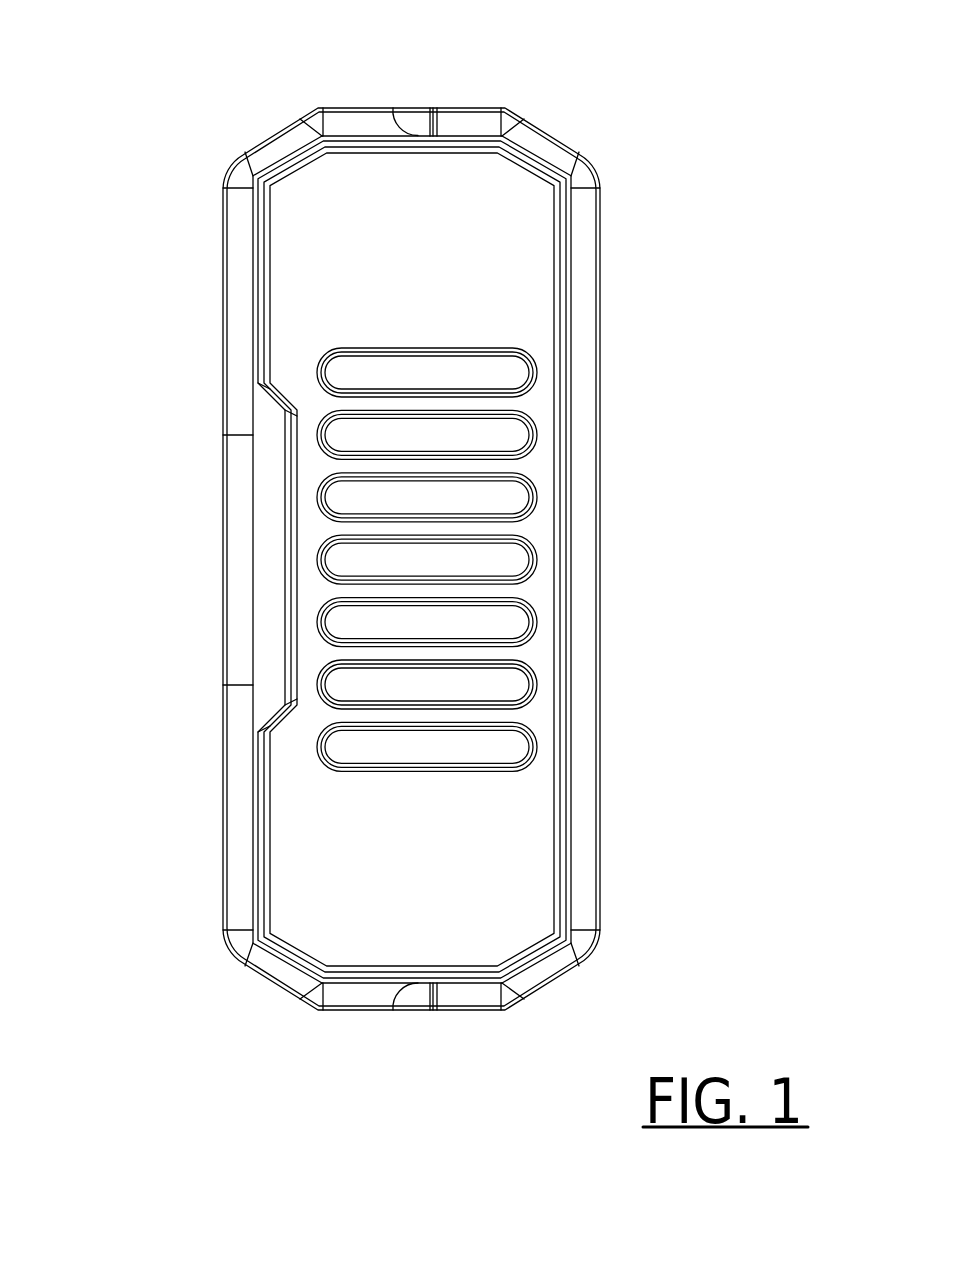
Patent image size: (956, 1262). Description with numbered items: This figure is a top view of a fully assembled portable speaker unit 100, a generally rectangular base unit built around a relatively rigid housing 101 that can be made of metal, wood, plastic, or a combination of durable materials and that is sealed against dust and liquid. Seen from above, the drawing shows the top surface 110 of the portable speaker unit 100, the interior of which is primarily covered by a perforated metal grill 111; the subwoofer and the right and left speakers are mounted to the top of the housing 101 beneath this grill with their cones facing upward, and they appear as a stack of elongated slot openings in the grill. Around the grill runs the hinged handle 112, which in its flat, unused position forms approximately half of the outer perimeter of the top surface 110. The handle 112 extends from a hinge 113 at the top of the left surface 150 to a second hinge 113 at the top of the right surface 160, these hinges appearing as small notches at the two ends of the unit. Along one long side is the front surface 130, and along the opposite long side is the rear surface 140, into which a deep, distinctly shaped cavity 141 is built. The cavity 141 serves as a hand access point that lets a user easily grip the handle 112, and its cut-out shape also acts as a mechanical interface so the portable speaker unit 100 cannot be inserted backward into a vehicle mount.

The portable speaker unit 100 is at (578, 141).
The housing 101 is at (578, 650).
The top surface 110 is at (290, 873).
The perforated metal grill 111 is at (505, 310).
The hinged handle 112 is at (235, 487).
The hinge 113 is at (430, 106).
The front surface 130 is at (601, 493).
The rear surface 140 is at (224, 346).
The cavity 141 is at (267, 622).
The left surface 150 is at (360, 1014).
The right surface 160 is at (346, 106).